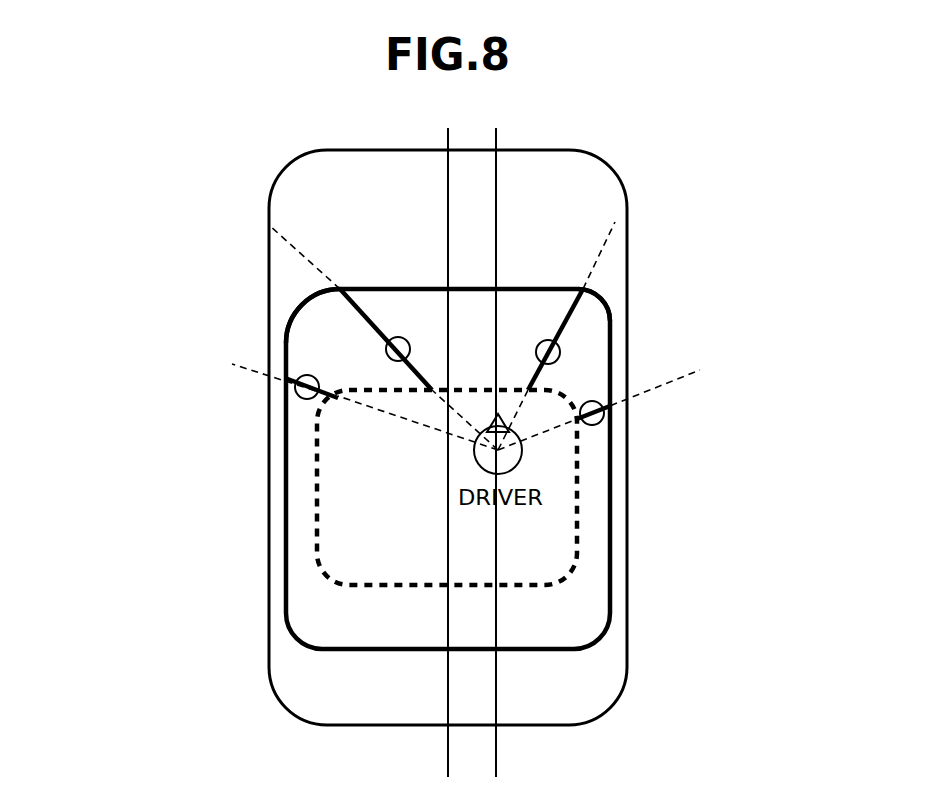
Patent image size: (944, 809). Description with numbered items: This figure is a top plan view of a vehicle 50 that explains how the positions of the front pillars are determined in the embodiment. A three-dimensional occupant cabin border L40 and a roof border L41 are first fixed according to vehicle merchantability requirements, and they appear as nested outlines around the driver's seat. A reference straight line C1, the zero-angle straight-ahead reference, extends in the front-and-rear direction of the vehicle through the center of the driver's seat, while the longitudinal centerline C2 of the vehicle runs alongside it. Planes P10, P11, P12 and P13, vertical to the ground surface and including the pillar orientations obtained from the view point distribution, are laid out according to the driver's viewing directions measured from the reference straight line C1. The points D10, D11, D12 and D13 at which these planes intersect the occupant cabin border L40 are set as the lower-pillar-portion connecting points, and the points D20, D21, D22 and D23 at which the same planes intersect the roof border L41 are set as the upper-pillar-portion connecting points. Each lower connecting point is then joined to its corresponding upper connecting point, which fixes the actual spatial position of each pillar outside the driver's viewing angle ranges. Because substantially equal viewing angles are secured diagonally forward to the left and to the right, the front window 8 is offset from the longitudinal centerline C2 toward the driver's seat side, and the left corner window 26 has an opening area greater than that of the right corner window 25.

The front window 8 is at (514, 413).
The right corner window 25 is at (592, 338).
The left corner window 26 is at (320, 327).
The vehicle 50 is at (628, 281).
The occupant cabin border L40 is at (608, 308).
The roof border L41 is at (558, 580).
The reference straight line C1 is at (497, 752).
The longitudinal centerline C2 is at (447, 752).
The lower-pillar-portion connecting point D10 is at (295, 388).
The lower-pillar-portion connecting point D11 is at (338, 287).
The lower-pillar-portion connecting point D12 is at (582, 287).
The lower-pillar-portion connecting point D13 is at (604, 413).
The upper-pillar-portion connecting point D20 is at (338, 396).
The upper-pillar-portion connecting point D21 is at (432, 390).
The upper-pillar-portion connecting point D22 is at (537, 390).
The upper-pillar-portion connecting point D23 is at (578, 421).
The plane P10 is at (258, 362).
The plane P11 is at (302, 260).
The plane P12 is at (603, 252).
The plane P13 is at (700, 372).